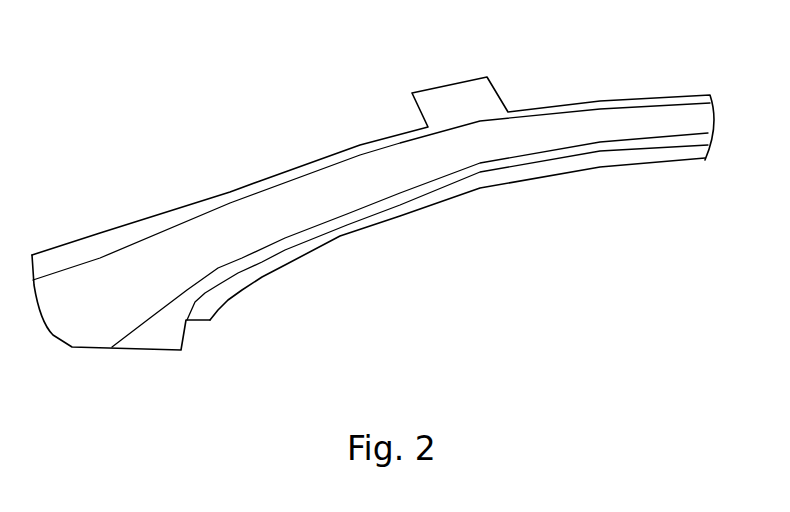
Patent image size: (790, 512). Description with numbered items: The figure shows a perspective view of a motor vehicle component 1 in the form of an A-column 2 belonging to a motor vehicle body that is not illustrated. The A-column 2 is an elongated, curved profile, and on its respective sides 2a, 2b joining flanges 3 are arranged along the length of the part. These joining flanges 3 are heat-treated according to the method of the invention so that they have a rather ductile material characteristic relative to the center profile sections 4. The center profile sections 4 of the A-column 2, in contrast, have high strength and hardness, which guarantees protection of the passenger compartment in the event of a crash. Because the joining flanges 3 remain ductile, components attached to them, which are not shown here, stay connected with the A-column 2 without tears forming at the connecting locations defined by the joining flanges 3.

The motor vehicle component 1 is at (192, 72).
The A-column 2 is at (210, 230).
The side of the A-column 2a is at (260, 277).
The side of the A-column 2b is at (259, 177).
The joining flanges 3 is at (347, 157).
The center profile sections 4 is at (407, 165).